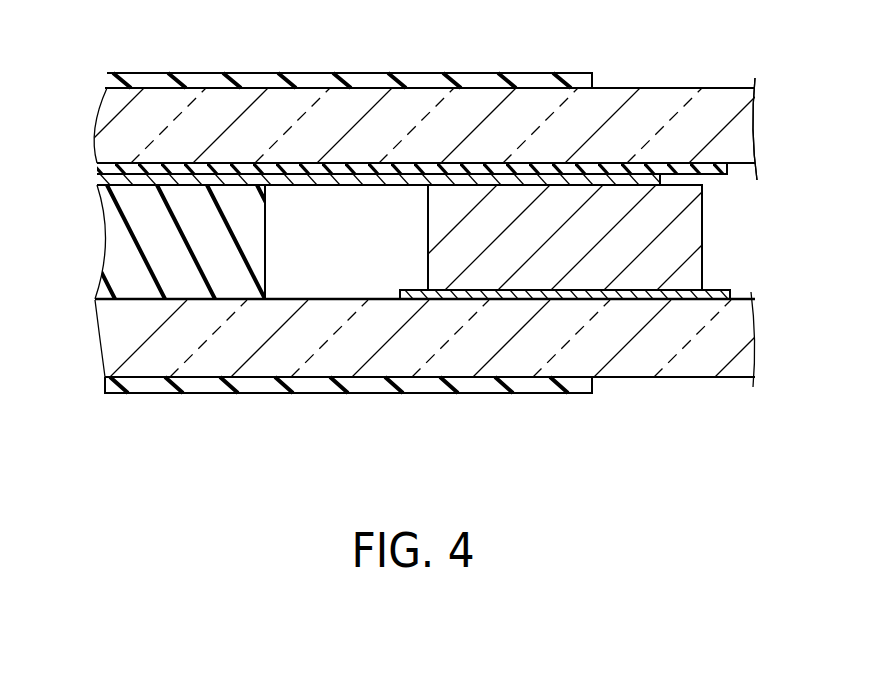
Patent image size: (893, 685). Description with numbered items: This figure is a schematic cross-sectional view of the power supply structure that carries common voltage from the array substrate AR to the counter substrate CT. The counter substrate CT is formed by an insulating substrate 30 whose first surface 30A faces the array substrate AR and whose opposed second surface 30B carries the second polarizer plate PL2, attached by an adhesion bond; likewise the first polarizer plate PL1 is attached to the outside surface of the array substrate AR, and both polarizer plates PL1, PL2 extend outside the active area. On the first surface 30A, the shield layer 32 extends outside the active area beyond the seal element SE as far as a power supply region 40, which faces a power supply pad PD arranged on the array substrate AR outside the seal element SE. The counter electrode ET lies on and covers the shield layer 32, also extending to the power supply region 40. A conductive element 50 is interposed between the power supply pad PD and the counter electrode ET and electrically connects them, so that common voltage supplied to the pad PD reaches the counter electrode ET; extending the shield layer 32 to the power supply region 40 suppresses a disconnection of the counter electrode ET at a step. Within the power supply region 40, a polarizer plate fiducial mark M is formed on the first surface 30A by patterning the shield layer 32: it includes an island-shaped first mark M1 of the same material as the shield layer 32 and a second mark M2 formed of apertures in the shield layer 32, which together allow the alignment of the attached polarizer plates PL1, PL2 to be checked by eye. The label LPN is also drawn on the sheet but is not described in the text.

The insulating substrate 30 is at (108, 138).
The first surface 30A is at (736, 164).
The second surface 30B is at (697, 88).
The second polarizer plate PL2 is at (107, 77).
The first polarizer plate PL1 is at (107, 386).
The array substrate AR is at (88, 345).
The counter substrate CT is at (768, 128).
The seal element SE is at (107, 243).
The counter electrode ET is at (303, 186).
The shield layer 32 is at (352, 168).
The power supply region 40 is at (408, 158).
The first mark M1 is at (575, 168).
The second mark M2 is at (497, 196).
The polarizer plate fiducial mark M is at (555, 319).
The power supply pad PD is at (645, 300).
The conductive element 50 is at (690, 275).
The liquid crystal panel LPN is at (267, 410).